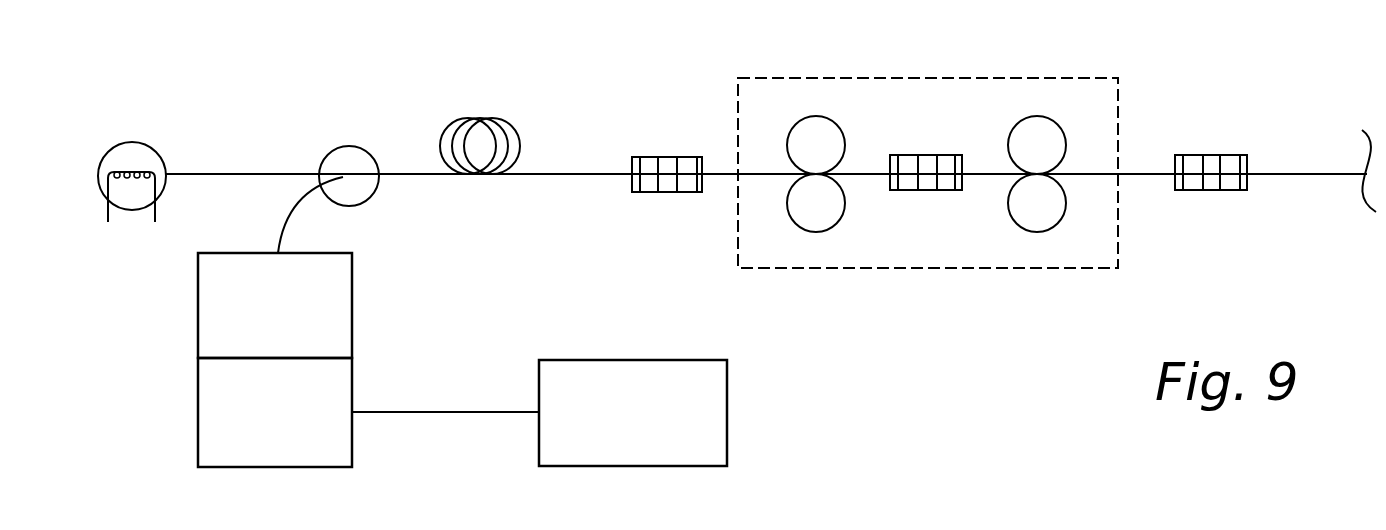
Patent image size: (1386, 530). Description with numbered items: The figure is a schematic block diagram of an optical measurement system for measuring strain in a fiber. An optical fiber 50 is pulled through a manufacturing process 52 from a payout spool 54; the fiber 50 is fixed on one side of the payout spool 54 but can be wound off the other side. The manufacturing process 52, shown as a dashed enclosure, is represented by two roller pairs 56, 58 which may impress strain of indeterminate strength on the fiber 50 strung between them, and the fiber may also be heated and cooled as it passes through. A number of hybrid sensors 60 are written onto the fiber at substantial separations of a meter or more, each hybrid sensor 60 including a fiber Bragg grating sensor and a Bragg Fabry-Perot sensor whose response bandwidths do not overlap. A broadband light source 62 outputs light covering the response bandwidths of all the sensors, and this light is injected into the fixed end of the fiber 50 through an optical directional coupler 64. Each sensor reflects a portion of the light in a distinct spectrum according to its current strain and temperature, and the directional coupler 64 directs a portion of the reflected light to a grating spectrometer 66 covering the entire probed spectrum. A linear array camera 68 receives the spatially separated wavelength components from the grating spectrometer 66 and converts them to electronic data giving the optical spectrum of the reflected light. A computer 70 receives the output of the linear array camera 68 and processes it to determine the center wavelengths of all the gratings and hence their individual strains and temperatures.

The optical fiber 50 is at (1292, 173).
The manufacturing process 52 is at (927, 78).
The payout spool 54 is at (453, 116).
The roller pair 56 is at (843, 128).
The roller pair 58 is at (1008, 128).
The hybrid sensor 60 is at (665, 157).
The broadband light source 62 is at (129, 140).
The optical directional coupler 64 is at (352, 146).
The grating spectrometer 66 is at (198, 305).
The linear array camera 68 is at (198, 412).
The computer 70 is at (727, 412).